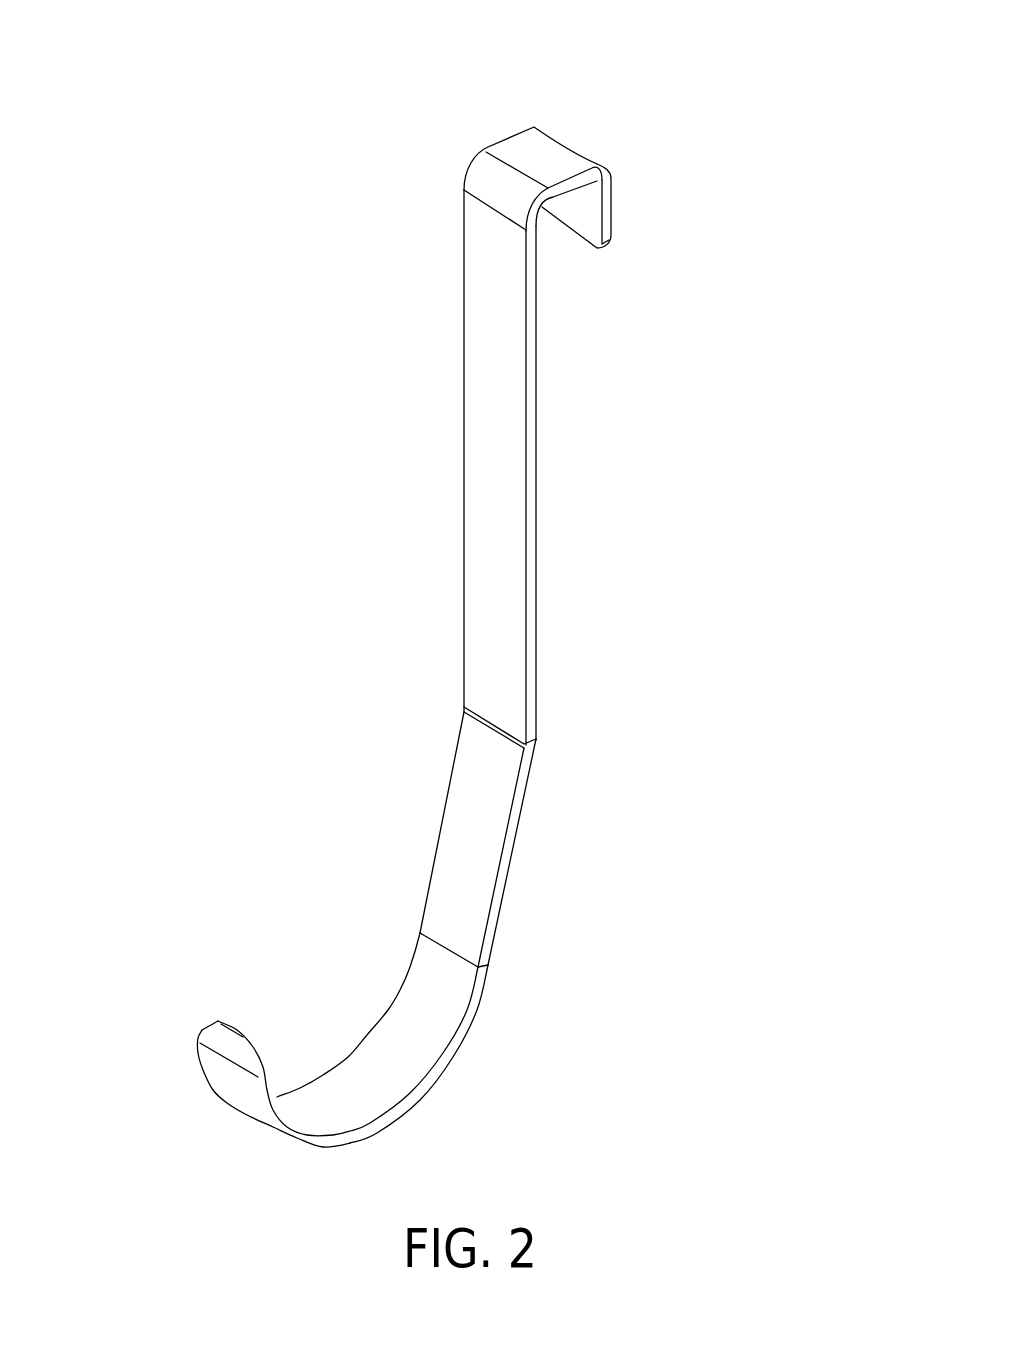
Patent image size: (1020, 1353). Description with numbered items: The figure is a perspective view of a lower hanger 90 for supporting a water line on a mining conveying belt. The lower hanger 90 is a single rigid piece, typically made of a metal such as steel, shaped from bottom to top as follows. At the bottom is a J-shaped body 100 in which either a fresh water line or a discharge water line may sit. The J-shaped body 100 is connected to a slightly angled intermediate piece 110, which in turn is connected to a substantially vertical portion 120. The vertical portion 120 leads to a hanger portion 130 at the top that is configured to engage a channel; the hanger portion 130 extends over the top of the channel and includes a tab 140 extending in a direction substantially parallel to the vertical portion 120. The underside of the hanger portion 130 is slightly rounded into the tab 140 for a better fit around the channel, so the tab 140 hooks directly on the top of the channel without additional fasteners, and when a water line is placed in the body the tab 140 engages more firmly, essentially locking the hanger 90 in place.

The lower hanger 90 is at (292, 655).
The J-shaped body 100 is at (413, 1102).
The intermediate piece 110 is at (515, 850).
The vertical portion 120 is at (537, 497).
The hanger portion 130 is at (548, 134).
The tab 140 is at (614, 213).